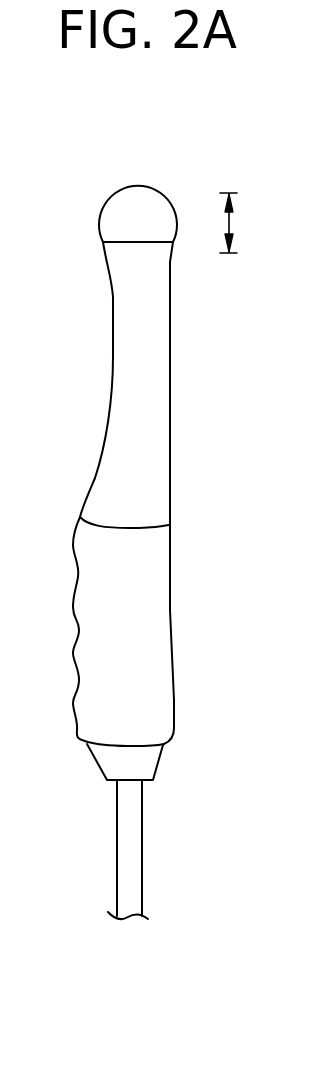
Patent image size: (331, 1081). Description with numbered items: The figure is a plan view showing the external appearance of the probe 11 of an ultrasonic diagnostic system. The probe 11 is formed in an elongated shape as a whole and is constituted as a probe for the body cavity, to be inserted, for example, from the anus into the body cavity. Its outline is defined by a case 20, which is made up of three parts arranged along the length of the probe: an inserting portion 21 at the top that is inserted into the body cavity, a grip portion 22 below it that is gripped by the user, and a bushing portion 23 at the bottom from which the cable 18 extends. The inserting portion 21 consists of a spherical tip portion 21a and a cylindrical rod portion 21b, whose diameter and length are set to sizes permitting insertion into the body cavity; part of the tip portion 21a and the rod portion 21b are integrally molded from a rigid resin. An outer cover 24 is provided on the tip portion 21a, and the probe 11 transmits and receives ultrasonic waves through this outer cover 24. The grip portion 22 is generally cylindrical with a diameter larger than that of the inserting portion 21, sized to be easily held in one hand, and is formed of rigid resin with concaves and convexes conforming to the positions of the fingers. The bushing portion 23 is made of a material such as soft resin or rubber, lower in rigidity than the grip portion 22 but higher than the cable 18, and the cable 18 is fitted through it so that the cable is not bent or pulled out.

The probe 11 is at (106, 158).
The cable 18 is at (128, 850).
The case 20 is at (160, 490).
The inserting portion 21 is at (160, 313).
The tip portion 21a is at (152, 200).
The rod portion 21b is at (160, 410).
The grip portion 22 is at (162, 607).
The bushing portion 23 is at (143, 758).
The outer cover 24 is at (113, 216).